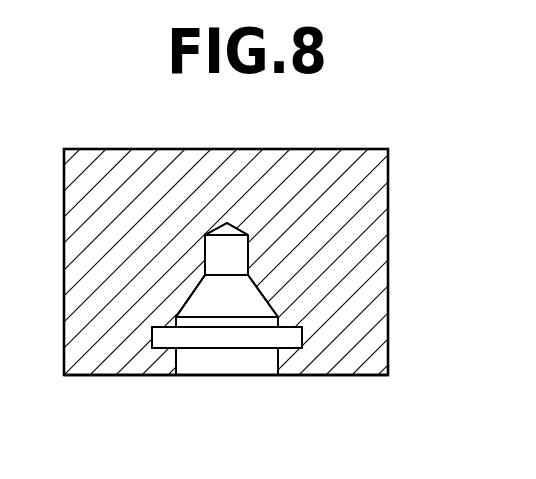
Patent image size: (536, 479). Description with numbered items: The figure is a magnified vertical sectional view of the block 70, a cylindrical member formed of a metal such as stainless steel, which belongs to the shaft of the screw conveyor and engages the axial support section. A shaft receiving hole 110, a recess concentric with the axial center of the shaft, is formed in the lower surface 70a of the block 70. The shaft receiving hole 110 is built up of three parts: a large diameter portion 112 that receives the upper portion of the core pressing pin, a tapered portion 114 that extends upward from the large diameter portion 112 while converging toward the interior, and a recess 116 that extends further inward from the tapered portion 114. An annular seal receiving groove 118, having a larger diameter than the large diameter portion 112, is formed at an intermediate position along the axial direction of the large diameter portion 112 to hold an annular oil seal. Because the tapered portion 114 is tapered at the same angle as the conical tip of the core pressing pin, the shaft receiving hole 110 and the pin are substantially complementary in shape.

The block 70 is at (303, 141).
The lower surface of the block 70a is at (347, 376).
The shaft receiving hole 110 is at (235, 363).
The large diameter portion 112 is at (176, 363).
The tapered portion 114 is at (250, 306).
The recess 116 is at (211, 253).
The seal receiving groove 118 is at (158, 344).